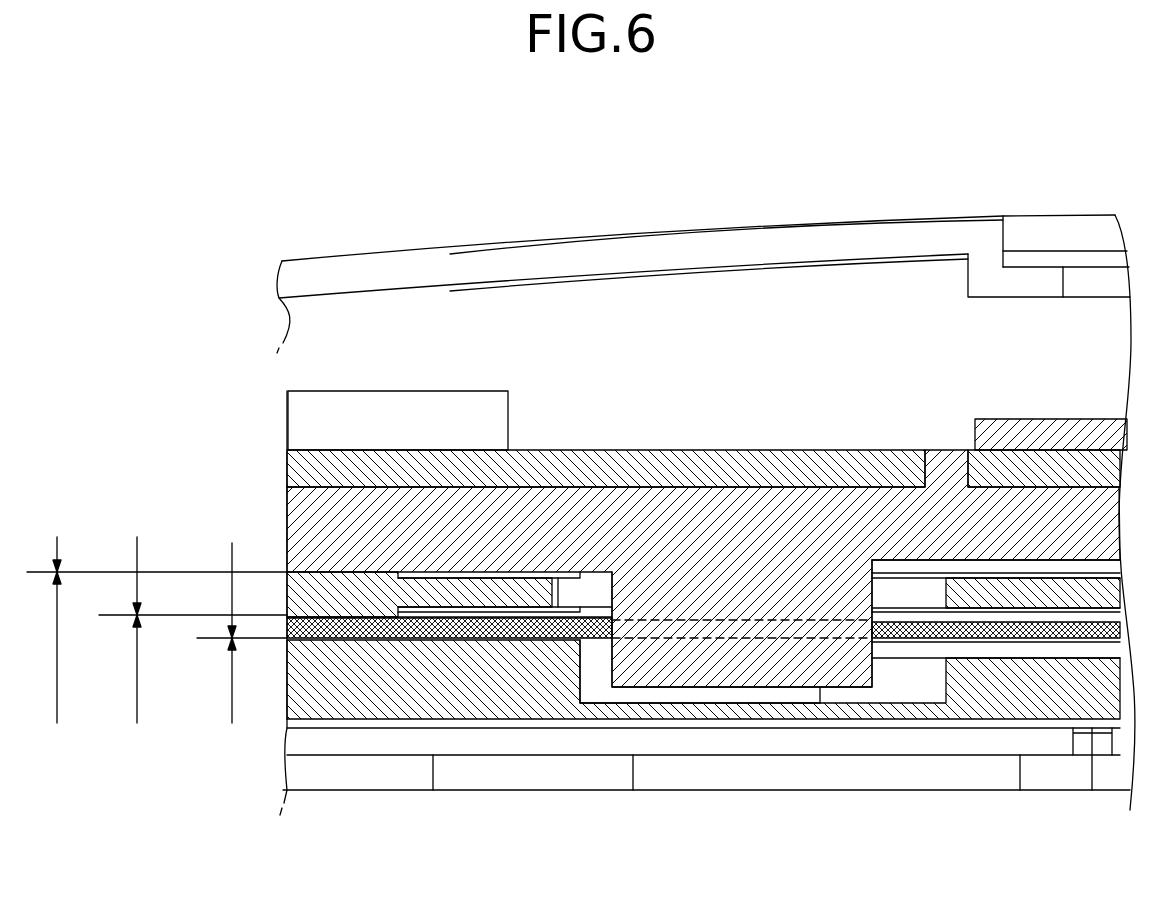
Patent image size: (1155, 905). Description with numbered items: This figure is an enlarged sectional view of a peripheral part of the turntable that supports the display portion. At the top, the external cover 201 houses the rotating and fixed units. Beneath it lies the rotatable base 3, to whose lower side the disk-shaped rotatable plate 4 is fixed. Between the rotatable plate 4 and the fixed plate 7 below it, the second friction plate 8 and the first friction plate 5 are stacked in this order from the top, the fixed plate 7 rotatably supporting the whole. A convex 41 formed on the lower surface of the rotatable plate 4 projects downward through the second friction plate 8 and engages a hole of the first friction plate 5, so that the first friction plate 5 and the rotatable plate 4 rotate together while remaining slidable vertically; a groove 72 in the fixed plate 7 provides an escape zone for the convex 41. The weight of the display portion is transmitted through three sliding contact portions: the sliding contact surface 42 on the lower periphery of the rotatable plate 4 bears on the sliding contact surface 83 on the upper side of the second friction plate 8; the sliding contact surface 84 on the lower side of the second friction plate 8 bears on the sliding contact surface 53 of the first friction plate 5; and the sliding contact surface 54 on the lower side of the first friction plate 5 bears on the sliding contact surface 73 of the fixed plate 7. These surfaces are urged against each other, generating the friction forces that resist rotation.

The external cover 201 is at (657, 247).
The rotatable base 3 is at (620, 470).
The rotatable plate 4 is at (720, 545).
The convex 41 is at (717, 672).
The first friction plate 5 is at (332, 628).
The fixed plate 7 is at (468, 702).
The groove 72 is at (583, 665).
The second friction plate 8 is at (368, 597).
The sliding contact surface 83 is at (157, 538).
The sliding contact surface 42 is at (57, 665).
The sliding contact surface 53 is at (193, 559).
The sliding contact surface 84 is at (137, 686).
The sliding contact surface 73 is at (242, 571).
The sliding contact surface 54 is at (232, 698).